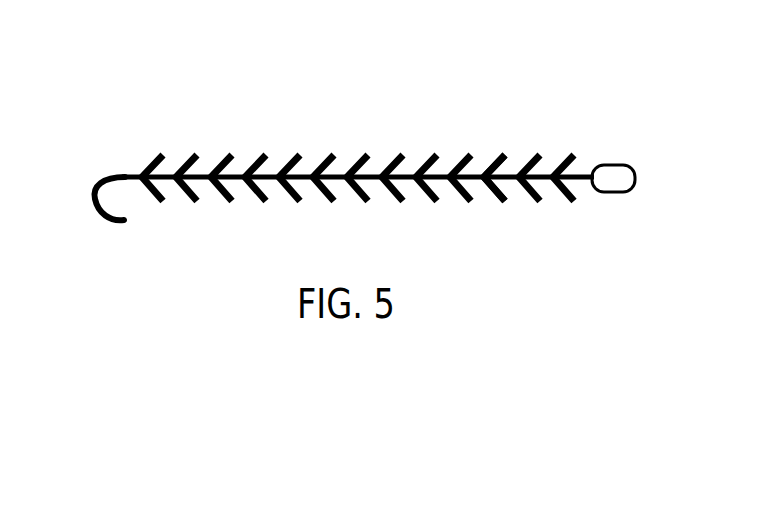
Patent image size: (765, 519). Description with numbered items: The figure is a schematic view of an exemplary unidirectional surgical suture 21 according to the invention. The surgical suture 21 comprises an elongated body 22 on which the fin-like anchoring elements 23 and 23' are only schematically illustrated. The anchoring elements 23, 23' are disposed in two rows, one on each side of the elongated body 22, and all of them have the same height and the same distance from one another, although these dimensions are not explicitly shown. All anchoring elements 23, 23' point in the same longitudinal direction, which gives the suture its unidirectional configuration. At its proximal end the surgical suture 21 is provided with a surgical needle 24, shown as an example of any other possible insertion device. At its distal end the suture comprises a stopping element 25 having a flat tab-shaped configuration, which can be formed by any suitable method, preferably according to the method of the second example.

The surgical suture 21 is at (347, 156).
The elongated body 22 is at (303, 173).
The anchoring element 23 is at (358, 143).
The anchoring element 23' is at (514, 214).
The surgical needle 24 is at (96, 211).
The stopping element 25 is at (613, 193).